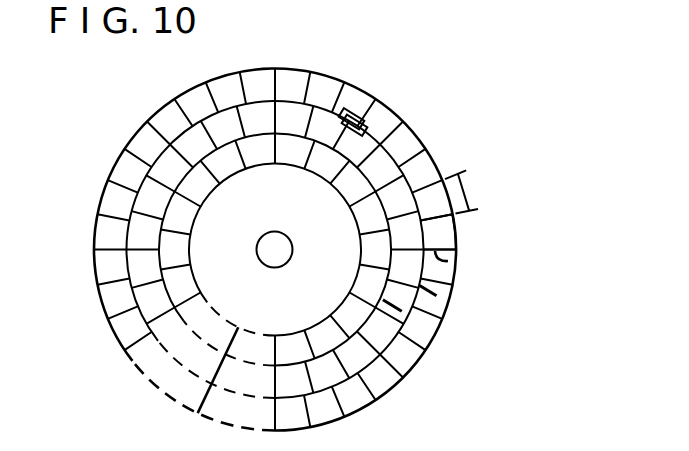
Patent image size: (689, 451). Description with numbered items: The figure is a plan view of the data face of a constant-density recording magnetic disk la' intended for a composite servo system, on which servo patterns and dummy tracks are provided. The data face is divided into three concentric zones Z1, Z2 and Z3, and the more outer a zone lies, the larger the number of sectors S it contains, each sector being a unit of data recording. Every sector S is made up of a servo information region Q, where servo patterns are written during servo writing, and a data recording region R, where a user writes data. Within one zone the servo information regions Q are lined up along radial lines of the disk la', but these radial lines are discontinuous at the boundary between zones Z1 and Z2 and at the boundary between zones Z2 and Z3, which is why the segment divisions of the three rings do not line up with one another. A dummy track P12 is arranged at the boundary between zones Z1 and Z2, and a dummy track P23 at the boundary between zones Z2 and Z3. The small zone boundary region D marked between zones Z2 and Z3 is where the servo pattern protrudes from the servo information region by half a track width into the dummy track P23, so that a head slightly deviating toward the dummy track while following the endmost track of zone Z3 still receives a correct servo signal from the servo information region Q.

The magnetic disk la' is at (294, 250).
The zone boundary region D is at (352, 110).
The sector S is at (466, 191).
The data recording region R is at (440, 232).
The servo information region Q is at (444, 263).
The dummy track P23 is at (447, 300).
The dummy track P12 is at (433, 342).
The zone Z1 is at (221, 337).
The zone Z2 is at (209, 365).
The zone Z3 is at (195, 393).